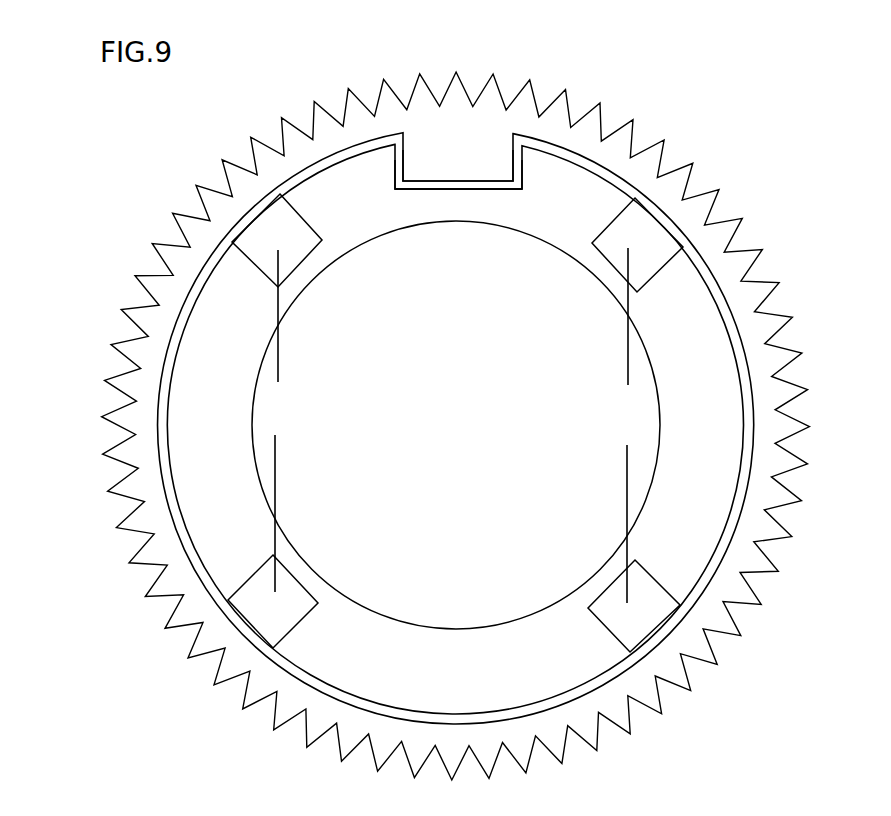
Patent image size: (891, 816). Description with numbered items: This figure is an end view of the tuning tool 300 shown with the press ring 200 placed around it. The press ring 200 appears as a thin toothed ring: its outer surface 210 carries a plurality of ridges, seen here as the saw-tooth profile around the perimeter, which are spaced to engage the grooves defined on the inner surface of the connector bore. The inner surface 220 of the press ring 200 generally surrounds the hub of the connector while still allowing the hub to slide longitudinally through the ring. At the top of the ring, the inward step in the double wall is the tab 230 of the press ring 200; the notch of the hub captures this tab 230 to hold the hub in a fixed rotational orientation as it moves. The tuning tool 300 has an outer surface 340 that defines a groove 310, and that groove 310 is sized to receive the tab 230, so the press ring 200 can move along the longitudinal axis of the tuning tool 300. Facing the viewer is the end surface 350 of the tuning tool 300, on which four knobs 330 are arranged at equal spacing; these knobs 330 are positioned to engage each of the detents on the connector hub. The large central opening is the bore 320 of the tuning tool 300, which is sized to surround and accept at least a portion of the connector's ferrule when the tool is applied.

The press ring 200 is at (494, 426).
The outer surface 210 is at (773, 378).
The inner surface 220 is at (753, 467).
The tab 230 is at (453, 155).
The tuning tool 300 is at (464, 428).
The groove 310 is at (455, 188).
The bore 320 is at (450, 577).
The knobs 330 is at (454, 425).
The outer surface 340 is at (709, 562).
The end surface 350 is at (687, 315).